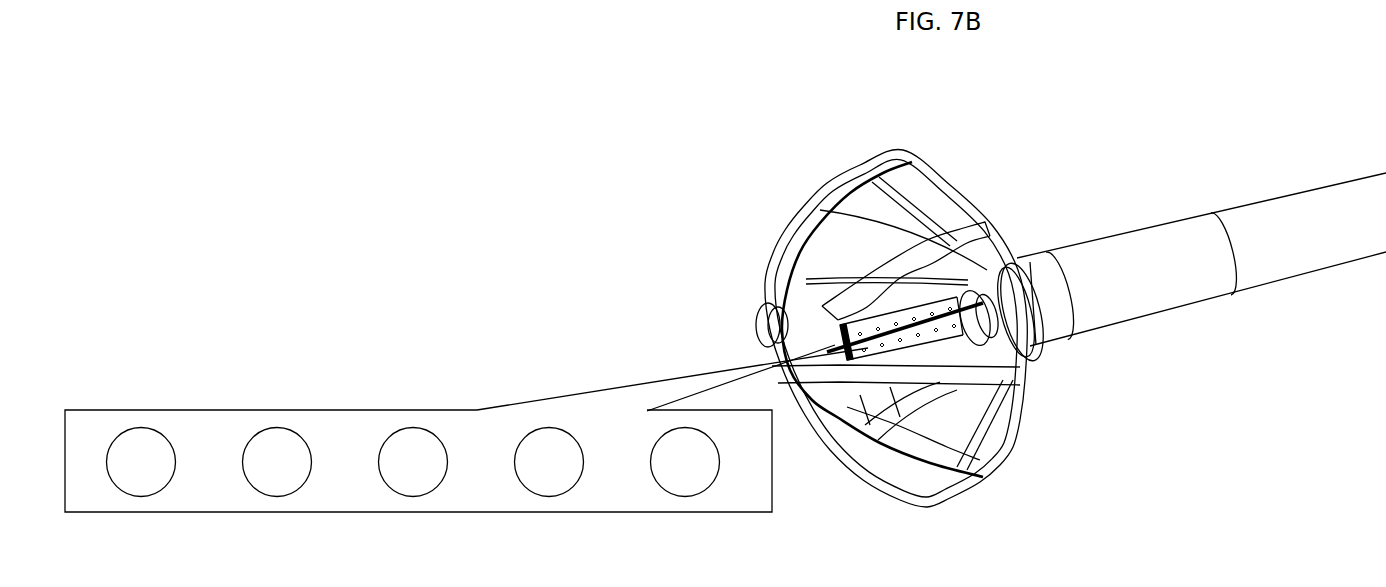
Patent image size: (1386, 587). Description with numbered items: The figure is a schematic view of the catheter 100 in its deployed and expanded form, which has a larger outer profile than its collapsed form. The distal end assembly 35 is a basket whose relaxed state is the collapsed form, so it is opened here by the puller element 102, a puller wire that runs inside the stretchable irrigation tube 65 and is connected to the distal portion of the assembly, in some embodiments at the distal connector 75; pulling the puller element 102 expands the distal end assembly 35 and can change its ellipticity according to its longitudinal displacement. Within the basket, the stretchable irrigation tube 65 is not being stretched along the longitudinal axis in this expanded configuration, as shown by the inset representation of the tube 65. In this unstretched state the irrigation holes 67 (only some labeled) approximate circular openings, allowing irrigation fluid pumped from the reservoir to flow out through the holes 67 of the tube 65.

The catheter 100 is at (695, 181).
The distal end assembly 35 is at (808, 194).
The stretchable irrigation tube 65 is at (767, 288).
The irrigation holes 67 is at (510, 409).
The distal connector 75 is at (766, 320).
The puller element 102 is at (462, 0).